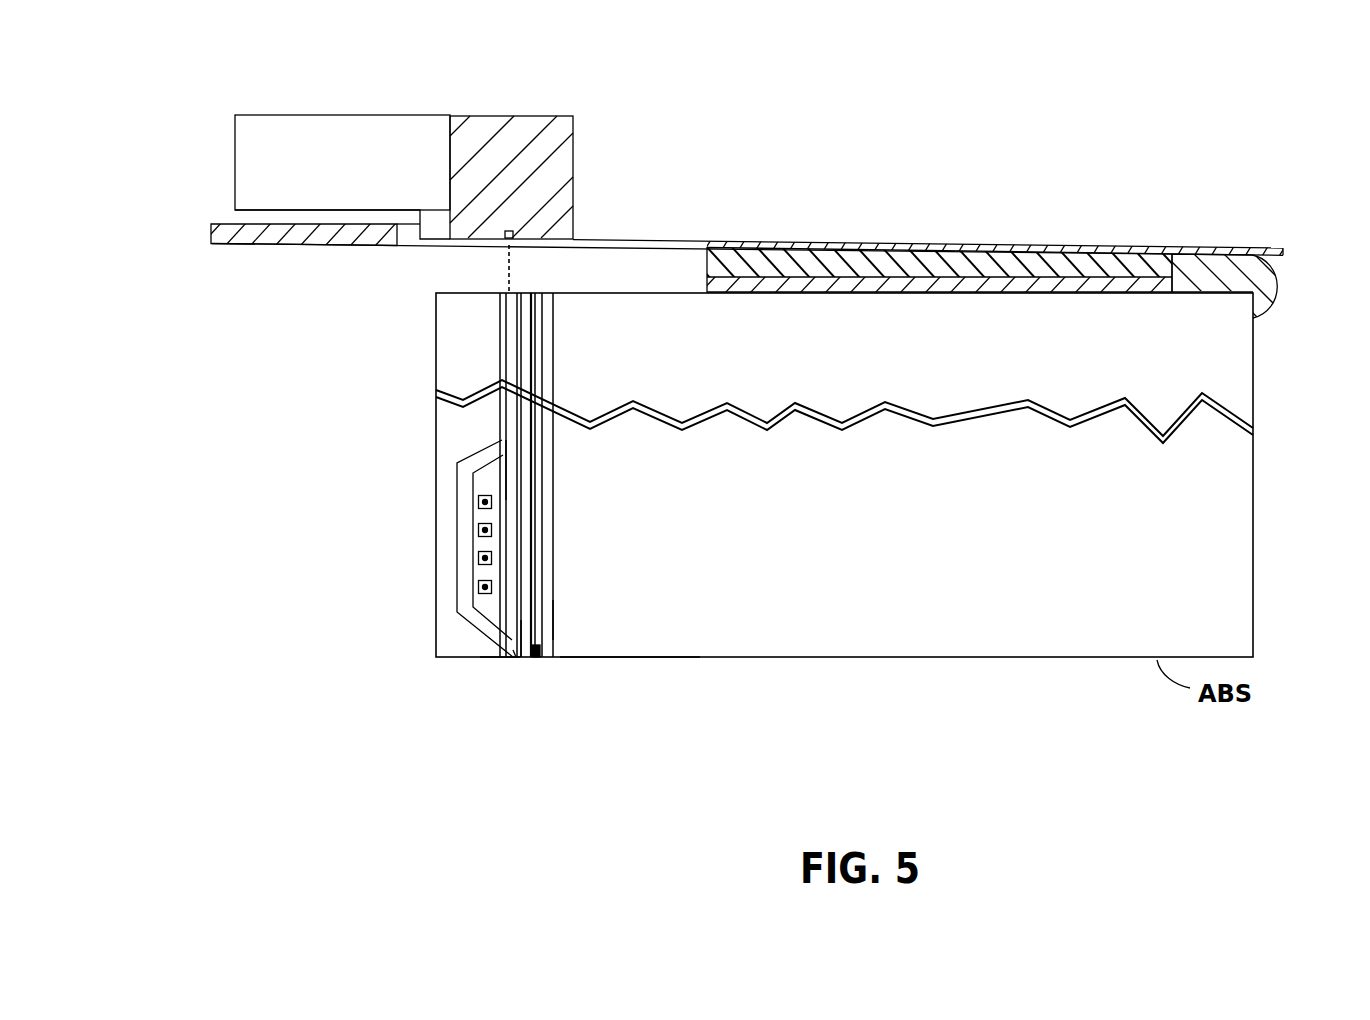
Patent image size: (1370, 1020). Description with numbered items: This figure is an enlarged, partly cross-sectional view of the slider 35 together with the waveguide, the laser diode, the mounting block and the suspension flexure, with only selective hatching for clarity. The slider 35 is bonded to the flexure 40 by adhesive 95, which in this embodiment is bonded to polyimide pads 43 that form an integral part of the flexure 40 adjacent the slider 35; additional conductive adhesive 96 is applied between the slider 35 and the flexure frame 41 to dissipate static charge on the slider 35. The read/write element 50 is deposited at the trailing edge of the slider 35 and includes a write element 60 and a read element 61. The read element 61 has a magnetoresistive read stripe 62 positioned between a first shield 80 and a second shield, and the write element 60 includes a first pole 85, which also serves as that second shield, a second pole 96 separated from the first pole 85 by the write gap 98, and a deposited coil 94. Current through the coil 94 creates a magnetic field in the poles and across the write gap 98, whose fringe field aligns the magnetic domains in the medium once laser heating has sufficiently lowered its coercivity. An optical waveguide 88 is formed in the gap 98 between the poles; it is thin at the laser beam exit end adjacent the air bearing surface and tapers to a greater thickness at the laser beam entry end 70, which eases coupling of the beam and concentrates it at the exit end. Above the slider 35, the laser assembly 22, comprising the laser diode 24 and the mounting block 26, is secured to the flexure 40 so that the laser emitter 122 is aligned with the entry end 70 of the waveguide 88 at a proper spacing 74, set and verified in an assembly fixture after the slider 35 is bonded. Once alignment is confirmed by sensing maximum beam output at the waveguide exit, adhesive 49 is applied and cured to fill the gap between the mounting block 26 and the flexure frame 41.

The laser assembly 22 is at (396, 102).
The laser diode 24 is at (513, 133).
The mounting block 26 is at (240, 132).
The adhesive 49 is at (236, 212).
The flexure frame 41 is at (212, 226).
The laser emitter 122 is at (530, 222).
The flexure 40 is at (810, 228).
The polyimide pads 43 is at (1130, 258).
The adhesive 95 is at (960, 292).
The second pole 96 is at (1275, 283).
The laser beam entry end 70 is at (484, 281).
The spacing 74 is at (510, 262).
The slider 35 is at (849, 477).
The optical waveguide 88 is at (510, 492).
The first shield 80 is at (548, 622).
The read/write element 50 is at (428, 531).
The deposited coil 94 is at (482, 560).
The write gap 98 is at (516, 660).
The first pole 85 is at (523, 660).
The magnetoresistive read stripe 62 is at (538, 660).
The write element 60 is at (466, 709).
The read element 61 is at (586, 680).